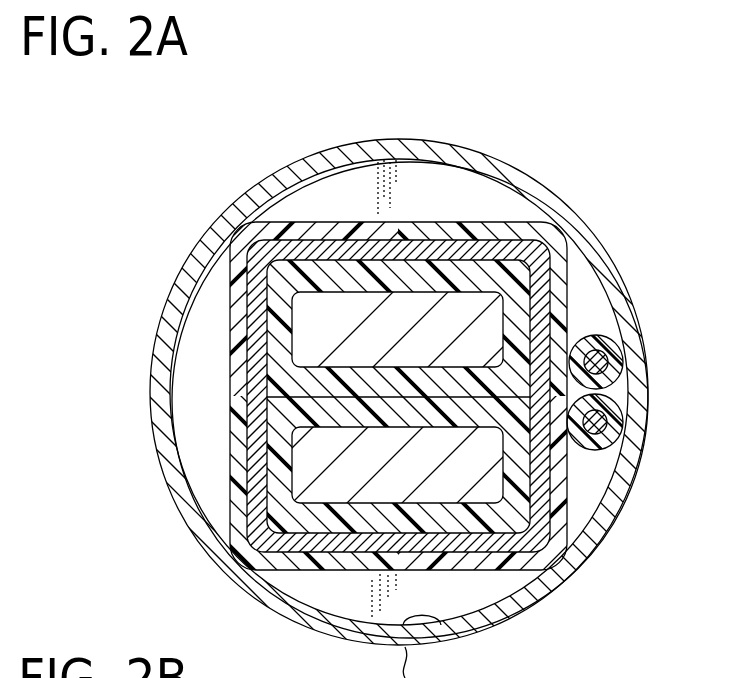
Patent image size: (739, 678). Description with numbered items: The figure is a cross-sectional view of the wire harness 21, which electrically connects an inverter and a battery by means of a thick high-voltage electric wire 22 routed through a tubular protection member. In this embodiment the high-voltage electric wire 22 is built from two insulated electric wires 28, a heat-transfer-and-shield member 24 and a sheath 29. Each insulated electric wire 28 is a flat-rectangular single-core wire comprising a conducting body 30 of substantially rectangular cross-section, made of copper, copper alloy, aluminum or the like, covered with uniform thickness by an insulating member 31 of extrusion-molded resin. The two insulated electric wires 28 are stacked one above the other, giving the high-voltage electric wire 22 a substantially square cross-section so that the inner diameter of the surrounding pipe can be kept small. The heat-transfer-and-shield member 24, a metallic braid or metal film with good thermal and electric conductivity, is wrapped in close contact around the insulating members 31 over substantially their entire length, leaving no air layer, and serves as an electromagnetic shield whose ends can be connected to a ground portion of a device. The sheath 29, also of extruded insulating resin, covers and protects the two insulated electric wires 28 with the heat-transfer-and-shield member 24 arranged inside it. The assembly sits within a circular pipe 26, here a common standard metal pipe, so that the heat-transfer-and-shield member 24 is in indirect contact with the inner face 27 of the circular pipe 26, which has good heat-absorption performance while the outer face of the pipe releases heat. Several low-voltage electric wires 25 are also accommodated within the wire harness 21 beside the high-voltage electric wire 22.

The wire harness 21 is at (229, 168).
The high-voltage electric wire 22 is at (369, 386).
The heat-transfer-and-shield member 24 is at (235, 343).
The low-voltage electric wires 25 is at (623, 352).
The circular pipe 26 is at (321, 158).
The inner face 27 is at (447, 628).
The insulated electric wire 28 is at (369, 389).
The sheath 29 is at (240, 440).
The conducting body 30 is at (323, 303).
The insulating member 31 is at (280, 325).